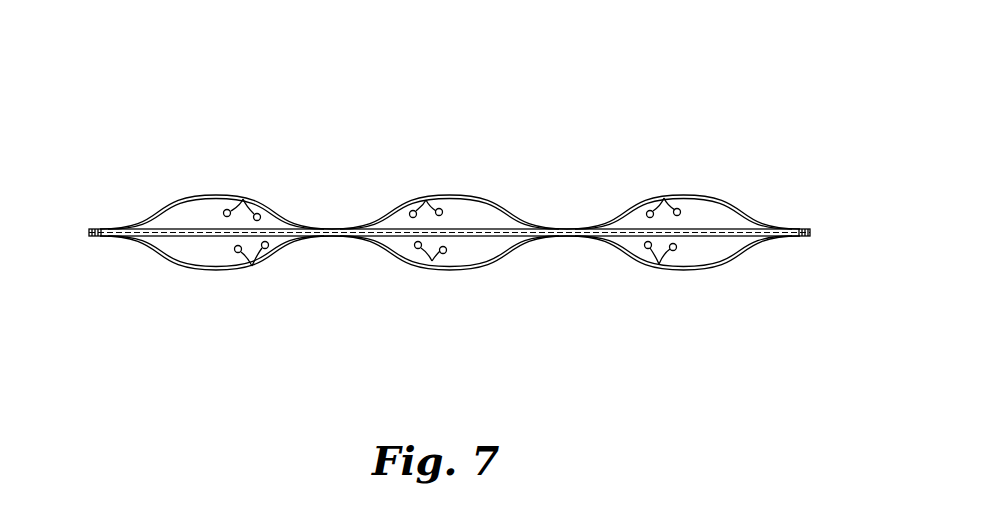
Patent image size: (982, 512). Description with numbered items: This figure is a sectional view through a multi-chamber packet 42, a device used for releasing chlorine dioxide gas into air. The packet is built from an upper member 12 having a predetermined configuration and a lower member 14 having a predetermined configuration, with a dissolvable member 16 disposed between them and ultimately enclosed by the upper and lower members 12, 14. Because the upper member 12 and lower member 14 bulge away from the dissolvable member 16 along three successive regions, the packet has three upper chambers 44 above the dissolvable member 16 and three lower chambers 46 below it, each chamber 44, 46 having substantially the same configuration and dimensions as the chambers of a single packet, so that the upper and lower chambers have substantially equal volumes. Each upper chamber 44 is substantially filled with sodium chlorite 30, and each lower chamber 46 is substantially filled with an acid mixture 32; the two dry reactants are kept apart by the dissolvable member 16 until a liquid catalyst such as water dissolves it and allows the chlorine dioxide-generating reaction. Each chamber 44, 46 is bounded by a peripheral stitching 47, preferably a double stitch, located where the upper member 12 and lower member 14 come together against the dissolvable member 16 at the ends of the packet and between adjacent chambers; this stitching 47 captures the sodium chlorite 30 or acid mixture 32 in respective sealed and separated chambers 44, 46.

The upper member 12 is at (150, 208).
The lower member 14 is at (152, 256).
The dissolvable member 16 is at (178, 230).
The sodium chlorite 30 is at (243, 203).
The acid mixture 32 is at (253, 264).
The multi-chamber packet 42 is at (555, 110).
The upper chamber 44 is at (205, 208).
The lower chamber 46 is at (205, 255).
The peripheral stitching 47 is at (106, 228).